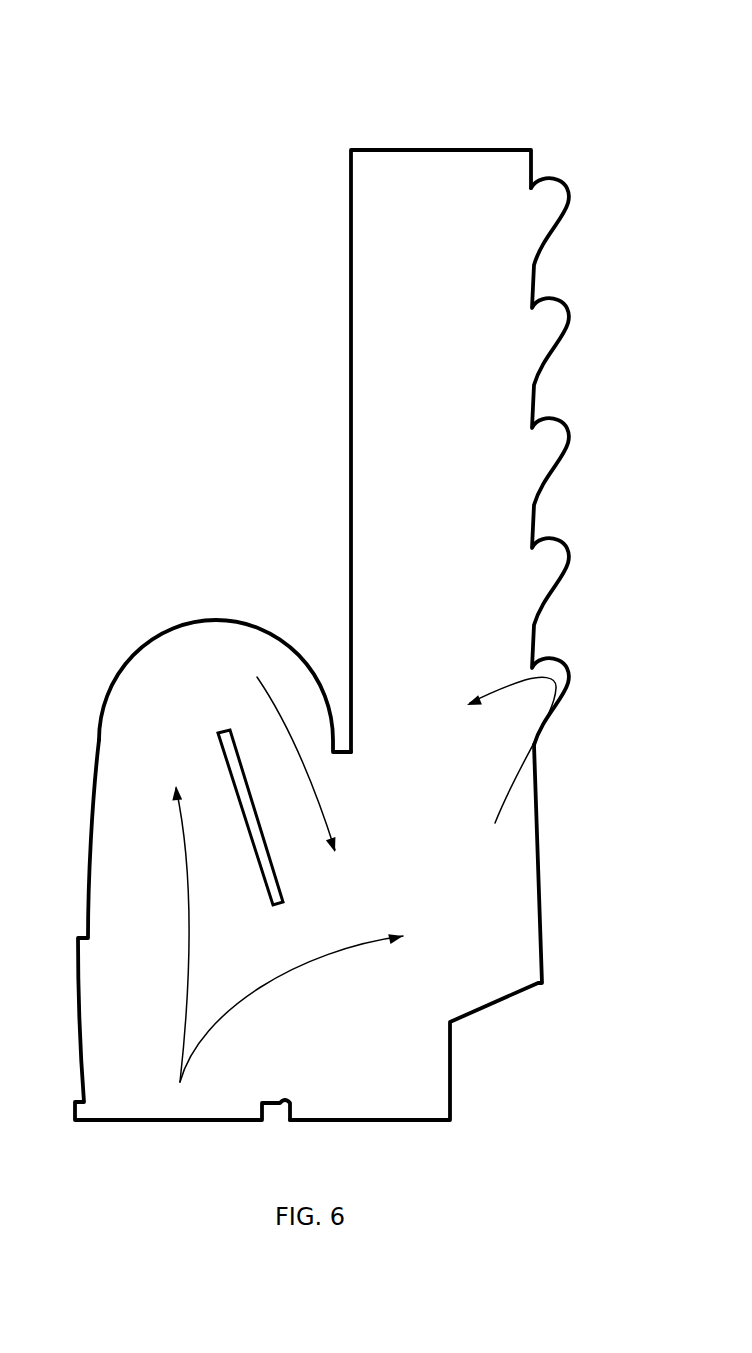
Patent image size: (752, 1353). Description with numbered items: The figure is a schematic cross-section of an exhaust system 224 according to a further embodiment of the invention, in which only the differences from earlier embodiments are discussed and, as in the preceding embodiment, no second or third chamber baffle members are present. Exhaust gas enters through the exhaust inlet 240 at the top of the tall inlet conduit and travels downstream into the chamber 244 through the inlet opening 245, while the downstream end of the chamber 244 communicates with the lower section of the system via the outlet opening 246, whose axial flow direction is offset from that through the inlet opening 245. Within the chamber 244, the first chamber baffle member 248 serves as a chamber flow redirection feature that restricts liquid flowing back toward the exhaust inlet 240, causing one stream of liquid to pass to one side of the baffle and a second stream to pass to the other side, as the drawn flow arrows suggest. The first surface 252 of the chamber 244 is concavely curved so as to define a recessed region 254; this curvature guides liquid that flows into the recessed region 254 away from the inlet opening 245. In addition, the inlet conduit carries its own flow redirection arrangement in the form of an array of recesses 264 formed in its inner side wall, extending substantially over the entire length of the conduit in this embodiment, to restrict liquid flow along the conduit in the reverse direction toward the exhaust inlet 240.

The exhaust system 224 is at (348, 599).
The exhaust inlet 240 is at (442, 150).
The chamber 244 is at (428, 852).
The inlet opening 245 is at (490, 747).
The outlet opening 246 is at (165, 1097).
The first chamber baffle member 248 is at (233, 784).
The first surface 252 is at (243, 620).
The recessed region 254 is at (203, 648).
The array of recesses 264 is at (550, 198).